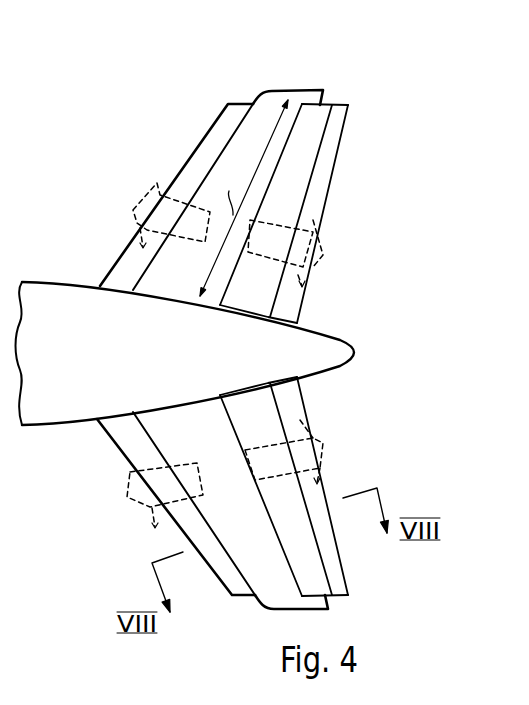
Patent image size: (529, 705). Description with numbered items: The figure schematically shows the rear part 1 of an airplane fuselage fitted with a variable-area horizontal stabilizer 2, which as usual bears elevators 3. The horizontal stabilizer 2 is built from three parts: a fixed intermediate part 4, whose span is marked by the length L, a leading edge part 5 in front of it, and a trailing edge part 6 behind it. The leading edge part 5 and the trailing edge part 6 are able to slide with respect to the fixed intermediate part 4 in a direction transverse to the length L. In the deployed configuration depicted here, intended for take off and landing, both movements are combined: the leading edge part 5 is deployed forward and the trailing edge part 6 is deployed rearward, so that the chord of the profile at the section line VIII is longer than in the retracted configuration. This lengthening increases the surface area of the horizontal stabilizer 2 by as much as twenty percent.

The rear part of the fuselage 1 is at (75, 323).
The horizontal stabilizer 2 is at (180, 157).
The elevators 3 is at (316, 185).
The intermediate part 4 is at (261, 124).
The leading edge part 5 is at (215, 135).
The trailing edge part 6 is at (303, 150).